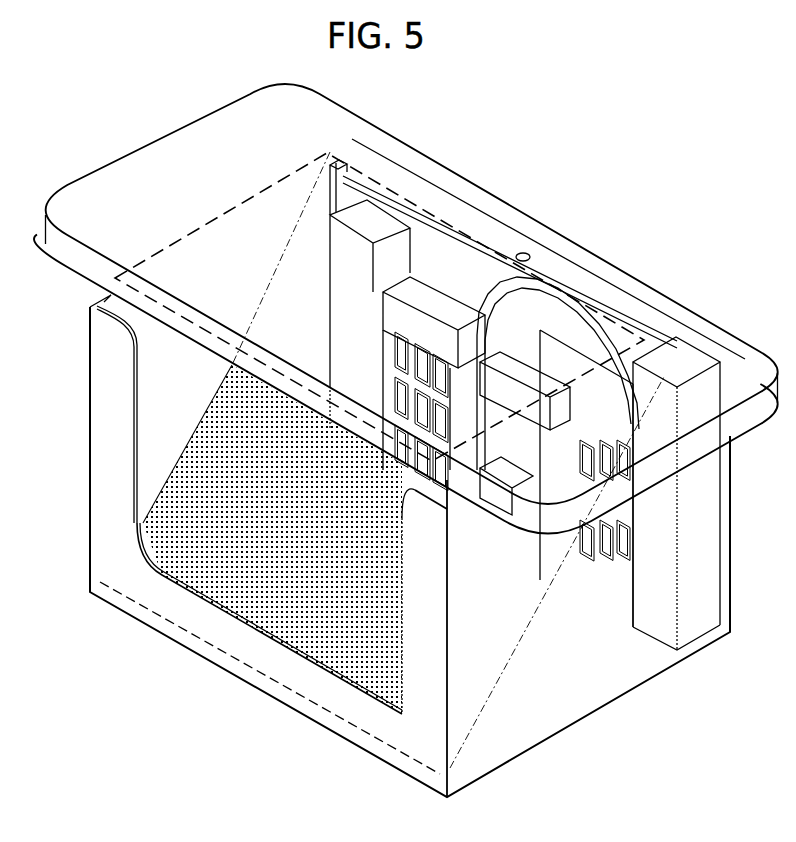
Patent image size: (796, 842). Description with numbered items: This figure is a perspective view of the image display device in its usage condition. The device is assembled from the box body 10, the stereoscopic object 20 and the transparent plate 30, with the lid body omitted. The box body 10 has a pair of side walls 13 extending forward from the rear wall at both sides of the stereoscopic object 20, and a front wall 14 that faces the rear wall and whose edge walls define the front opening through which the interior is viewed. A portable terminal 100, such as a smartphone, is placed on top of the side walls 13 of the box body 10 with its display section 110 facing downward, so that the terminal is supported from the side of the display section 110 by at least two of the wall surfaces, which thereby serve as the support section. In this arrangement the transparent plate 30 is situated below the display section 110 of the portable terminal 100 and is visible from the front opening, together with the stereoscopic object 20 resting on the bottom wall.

The box body 10 is at (562, 733).
The side walls 13 is at (160, 373).
The front wall 14 is at (255, 650).
The stereoscopic object 20 is at (442, 300).
The transparent plate 30 is at (170, 467).
The portable terminal 100 is at (623, 270).
The display section 110 is at (221, 213).